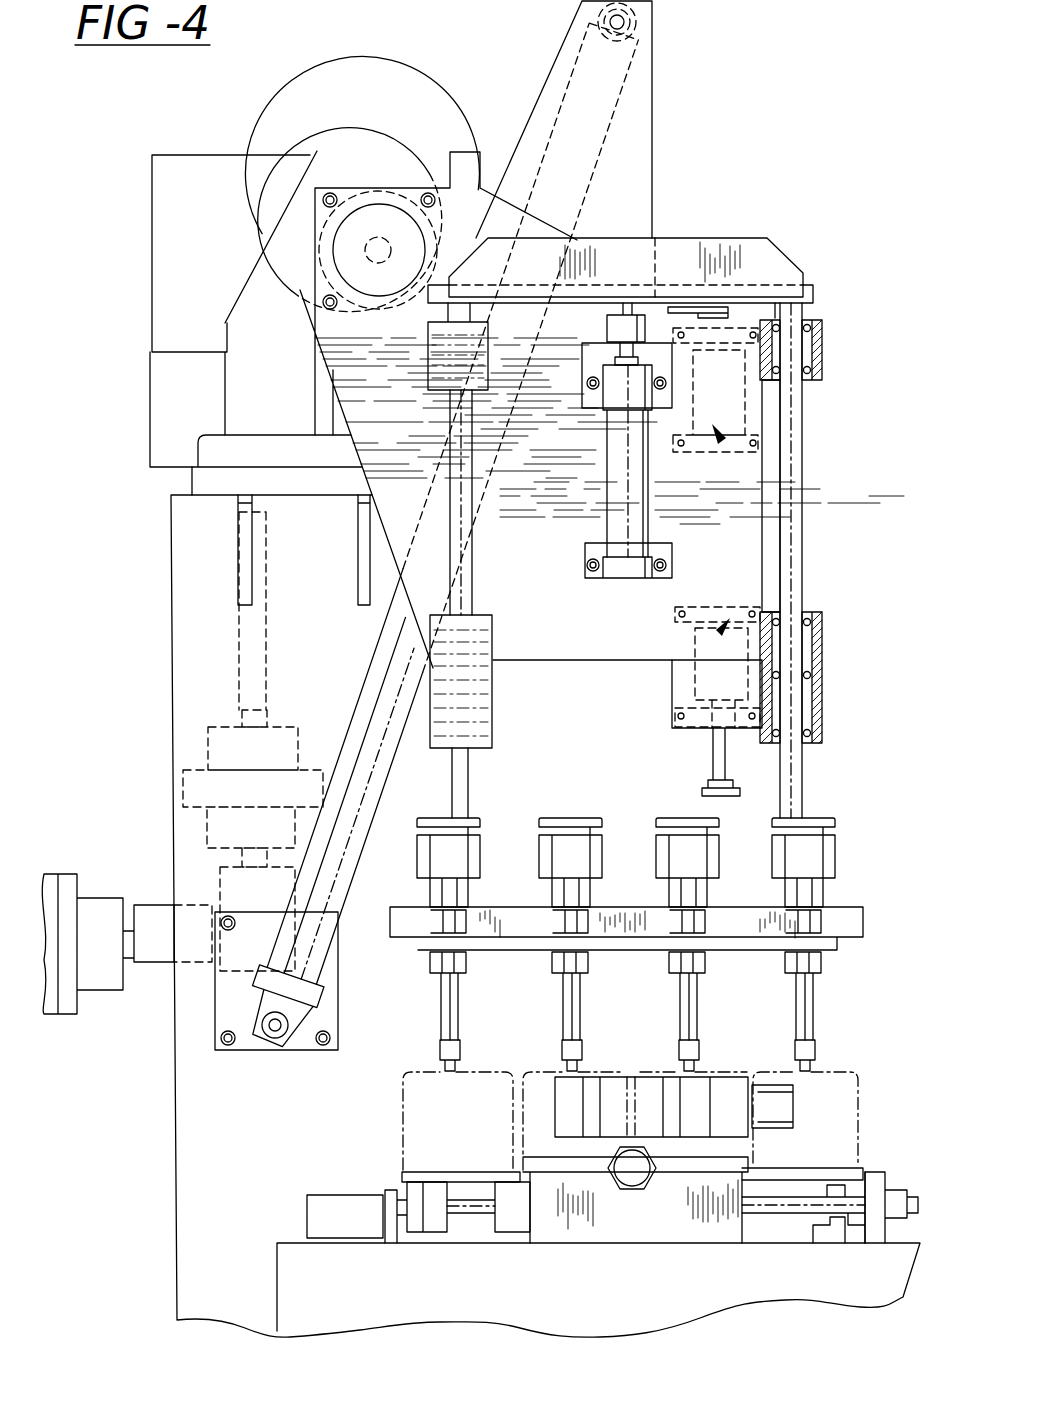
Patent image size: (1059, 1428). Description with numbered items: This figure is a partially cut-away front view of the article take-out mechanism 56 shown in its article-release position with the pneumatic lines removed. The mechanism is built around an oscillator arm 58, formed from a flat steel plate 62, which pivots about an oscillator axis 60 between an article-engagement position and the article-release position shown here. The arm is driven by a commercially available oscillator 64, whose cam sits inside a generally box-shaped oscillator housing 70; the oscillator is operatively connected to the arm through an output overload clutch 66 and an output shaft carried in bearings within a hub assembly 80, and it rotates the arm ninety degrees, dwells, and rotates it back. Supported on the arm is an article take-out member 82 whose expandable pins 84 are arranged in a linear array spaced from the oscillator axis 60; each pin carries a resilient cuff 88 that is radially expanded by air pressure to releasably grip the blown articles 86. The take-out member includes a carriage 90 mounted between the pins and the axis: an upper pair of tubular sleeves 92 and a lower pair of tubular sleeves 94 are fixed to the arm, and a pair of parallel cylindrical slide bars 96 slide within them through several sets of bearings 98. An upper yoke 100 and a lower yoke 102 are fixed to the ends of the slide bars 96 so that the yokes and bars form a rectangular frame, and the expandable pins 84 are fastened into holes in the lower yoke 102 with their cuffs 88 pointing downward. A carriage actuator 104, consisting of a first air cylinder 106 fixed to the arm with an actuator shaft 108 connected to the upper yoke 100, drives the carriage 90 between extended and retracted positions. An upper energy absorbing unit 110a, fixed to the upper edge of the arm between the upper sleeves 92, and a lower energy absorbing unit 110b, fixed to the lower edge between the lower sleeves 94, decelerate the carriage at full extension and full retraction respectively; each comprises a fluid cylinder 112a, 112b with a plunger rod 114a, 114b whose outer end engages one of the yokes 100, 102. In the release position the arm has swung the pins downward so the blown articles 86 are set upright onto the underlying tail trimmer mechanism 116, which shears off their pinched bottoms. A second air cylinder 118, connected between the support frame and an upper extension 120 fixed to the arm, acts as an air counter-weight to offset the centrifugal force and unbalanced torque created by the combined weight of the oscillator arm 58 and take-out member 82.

The article take-out mechanism 56 is at (128, 190).
The oscillator arm 58 is at (747, 505).
The oscillator axis 60 is at (378, 243).
The flat steel plate 62 is at (747, 563).
The oscillator 64 is at (262, 152).
The output overload clutch 66 is at (325, 158).
The oscillator housing 70 is at (190, 185).
The hub assembly 80 is at (420, 175).
The article take-out member 82 is at (785, 240).
The expandable pins 84 is at (560, 995).
The blown articles 86 is at (545, 1080).
The resilient cuff 88 is at (450, 1052).
The carriage 90 is at (804, 393).
The upper tubular sleeves 92 is at (813, 313).
The lower tubular sleeves 94 is at (495, 650).
The slide bars 96 is at (470, 805).
The bearings 98 is at (803, 332).
The upper yoke 100 is at (700, 248).
The lower yoke 102 is at (845, 905).
The carriage actuator 104 is at (608, 445).
The first air cylinder 106 is at (615, 515).
The actuator shaft 108 is at (627, 312).
The upper energy absorbing unit 110a is at (737, 450).
The lower energy absorbing unit 110b is at (740, 607).
The fluid cylinder 112a is at (728, 397).
The fluid cylinder 112b is at (672, 680).
The plunger rod 114a is at (760, 310).
The plunger rod 114b is at (714, 745).
The tail trimmer mechanism 116 is at (868, 1169).
The second air cylinder 118 is at (385, 665).
The upper extension 120 is at (640, 55).